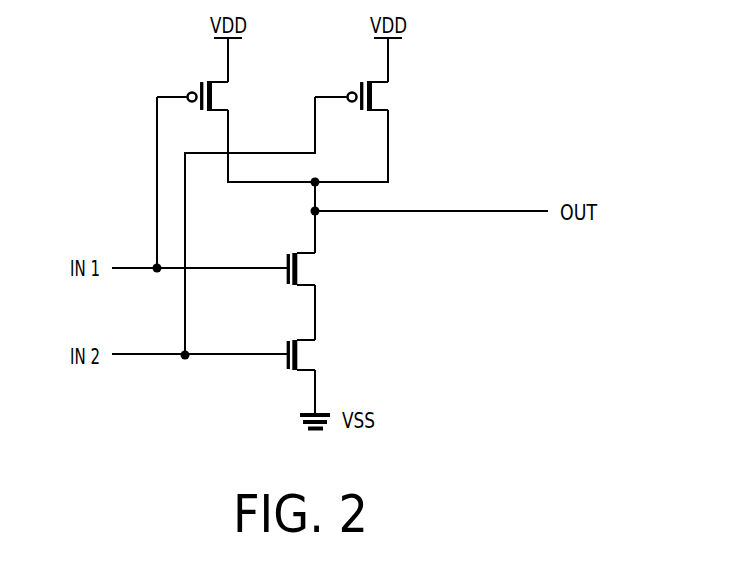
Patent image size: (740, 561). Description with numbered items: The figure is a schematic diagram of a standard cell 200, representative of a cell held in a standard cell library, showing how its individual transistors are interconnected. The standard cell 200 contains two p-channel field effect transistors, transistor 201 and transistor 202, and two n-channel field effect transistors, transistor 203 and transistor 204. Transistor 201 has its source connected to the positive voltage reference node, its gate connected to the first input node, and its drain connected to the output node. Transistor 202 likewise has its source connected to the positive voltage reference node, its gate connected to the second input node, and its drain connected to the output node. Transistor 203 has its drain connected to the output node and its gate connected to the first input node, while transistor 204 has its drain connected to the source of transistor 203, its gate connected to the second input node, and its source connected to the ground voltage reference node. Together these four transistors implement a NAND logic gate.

The standard cell 200 is at (160, 483).
The transistor 201 is at (215, 98).
The transistor 202 is at (375, 97).
The transistor 203 is at (302, 269).
The transistor 204 is at (302, 354).